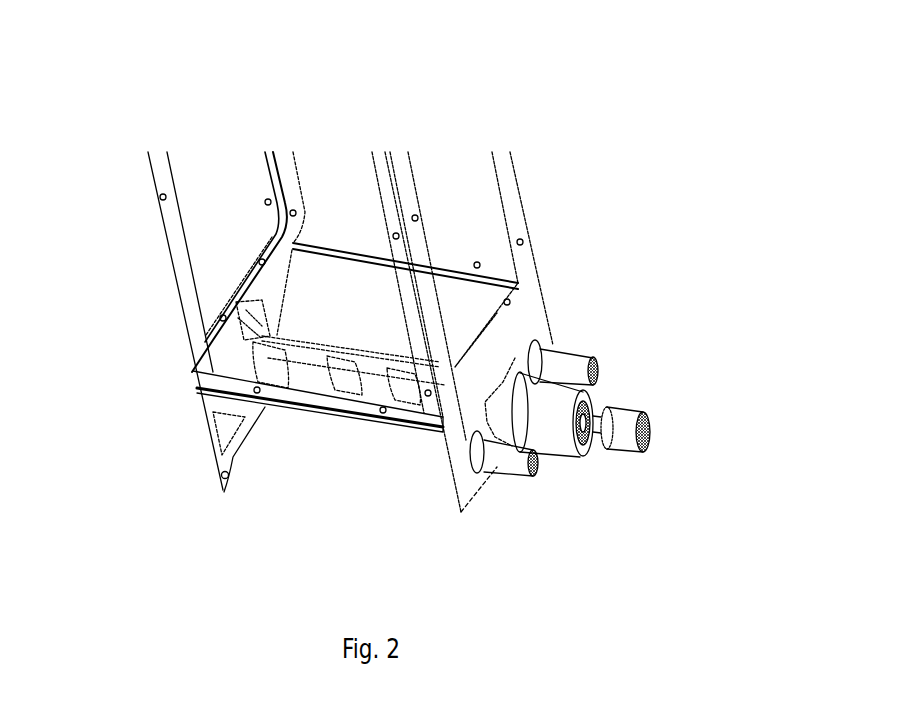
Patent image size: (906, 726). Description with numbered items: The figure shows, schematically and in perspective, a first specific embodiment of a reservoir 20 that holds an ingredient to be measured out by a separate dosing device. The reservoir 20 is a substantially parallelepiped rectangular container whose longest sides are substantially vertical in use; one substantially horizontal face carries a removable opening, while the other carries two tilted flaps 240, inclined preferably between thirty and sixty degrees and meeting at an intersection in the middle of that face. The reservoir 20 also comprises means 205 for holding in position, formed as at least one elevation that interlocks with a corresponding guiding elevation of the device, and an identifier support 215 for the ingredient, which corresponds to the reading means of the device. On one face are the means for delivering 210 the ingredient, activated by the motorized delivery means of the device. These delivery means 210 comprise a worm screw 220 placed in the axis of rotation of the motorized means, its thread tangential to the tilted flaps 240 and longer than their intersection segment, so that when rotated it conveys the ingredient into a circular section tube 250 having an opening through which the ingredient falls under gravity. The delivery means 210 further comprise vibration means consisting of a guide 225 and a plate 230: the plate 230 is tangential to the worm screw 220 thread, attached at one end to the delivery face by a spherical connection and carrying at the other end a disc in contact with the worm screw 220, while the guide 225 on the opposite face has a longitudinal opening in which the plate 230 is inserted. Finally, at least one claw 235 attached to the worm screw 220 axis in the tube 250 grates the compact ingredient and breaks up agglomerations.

The reservoir 20 is at (411, 92).
The means for holding in position 205 is at (503, 457).
The means for delivering 210 is at (648, 424).
The identifier support 215 is at (540, 323).
The worm screw 220 is at (347, 373).
The guide 225 is at (252, 331).
The plate 230 is at (282, 340).
The claw 235 is at (573, 440).
The tilted flaps 240 is at (453, 283).
The circular section tube 250 is at (537, 410).